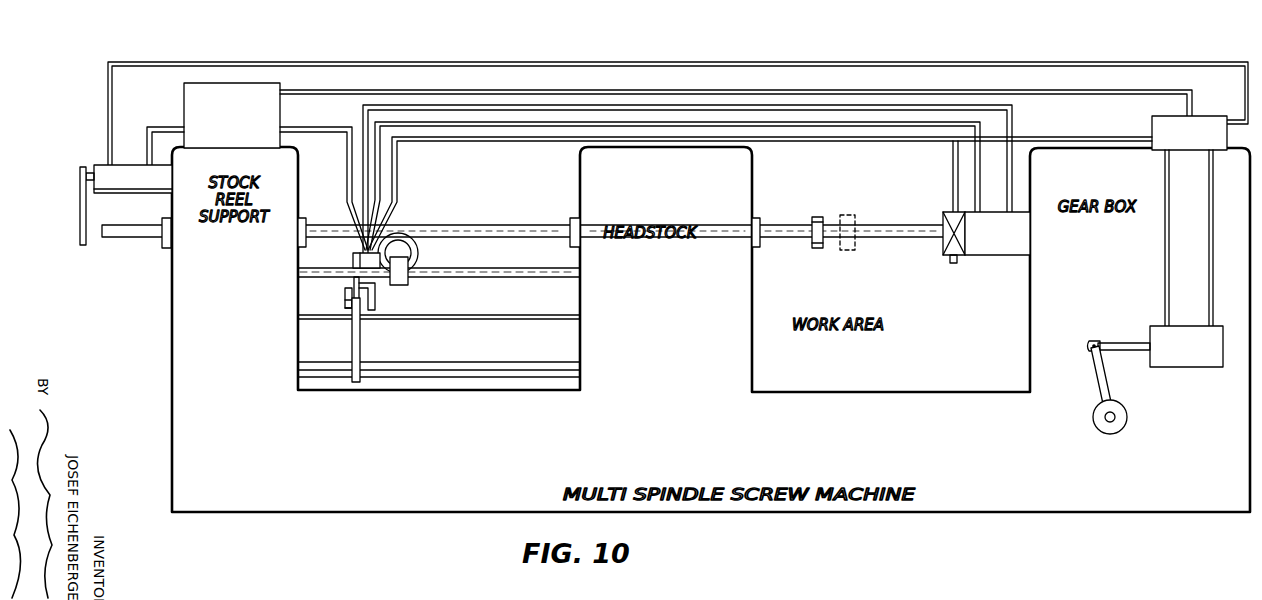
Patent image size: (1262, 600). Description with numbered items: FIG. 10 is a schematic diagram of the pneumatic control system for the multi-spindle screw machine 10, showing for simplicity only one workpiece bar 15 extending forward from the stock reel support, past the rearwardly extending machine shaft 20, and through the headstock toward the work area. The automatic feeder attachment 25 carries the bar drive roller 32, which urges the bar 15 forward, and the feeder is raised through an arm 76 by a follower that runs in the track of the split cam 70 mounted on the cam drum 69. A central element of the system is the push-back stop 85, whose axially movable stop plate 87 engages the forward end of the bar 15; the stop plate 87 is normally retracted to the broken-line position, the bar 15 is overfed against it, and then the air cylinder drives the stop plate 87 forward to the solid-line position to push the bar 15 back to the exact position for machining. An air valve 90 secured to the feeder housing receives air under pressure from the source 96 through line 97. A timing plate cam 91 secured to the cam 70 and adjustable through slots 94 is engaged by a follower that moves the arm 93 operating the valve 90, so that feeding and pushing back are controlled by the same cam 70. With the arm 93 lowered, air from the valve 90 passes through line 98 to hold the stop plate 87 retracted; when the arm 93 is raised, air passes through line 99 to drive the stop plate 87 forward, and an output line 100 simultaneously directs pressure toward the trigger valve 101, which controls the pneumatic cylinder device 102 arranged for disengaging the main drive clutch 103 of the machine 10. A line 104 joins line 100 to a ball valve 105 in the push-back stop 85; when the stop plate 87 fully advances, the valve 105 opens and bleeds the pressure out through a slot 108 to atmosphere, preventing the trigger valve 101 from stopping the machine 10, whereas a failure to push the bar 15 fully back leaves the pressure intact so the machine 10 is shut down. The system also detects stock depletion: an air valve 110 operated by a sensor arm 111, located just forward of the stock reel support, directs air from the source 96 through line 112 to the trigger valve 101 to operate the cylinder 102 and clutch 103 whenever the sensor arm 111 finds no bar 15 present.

The machine 10 is at (780, 44).
The workpiece bar 15 is at (511, 230).
The machine shaft 20 is at (530, 278).
The automatic feeder attachment 25 is at (398, 285).
The bar drive roller 32 is at (418, 253).
The cam drum 69 is at (490, 353).
The cam 70 is at (356, 330).
The arm 76 is at (378, 302).
The push-back stop 85 is at (1000, 248).
The stop plate 87 is at (819, 249).
The air valve 90 is at (353, 258).
The timing plate cam 91 is at (345, 306).
The arm 93 is at (352, 281).
The slots 94 is at (345, 296).
The air source 96 is at (228, 83).
The line 97 is at (347, 164).
The line 98 is at (385, 190).
The line 99 is at (362, 112).
The output line 100 is at (393, 163).
The trigger valve 101 is at (1204, 118).
The pneumatic cylinder device 102 is at (1190, 362).
The main drive clutch 103 is at (1097, 388).
The line 104 is at (952, 165).
The valve 105 is at (943, 215).
The slot 108 is at (952, 264).
The air valve 110 is at (148, 182).
The sensor arm 111 is at (80, 219).
The line 112 is at (110, 106).